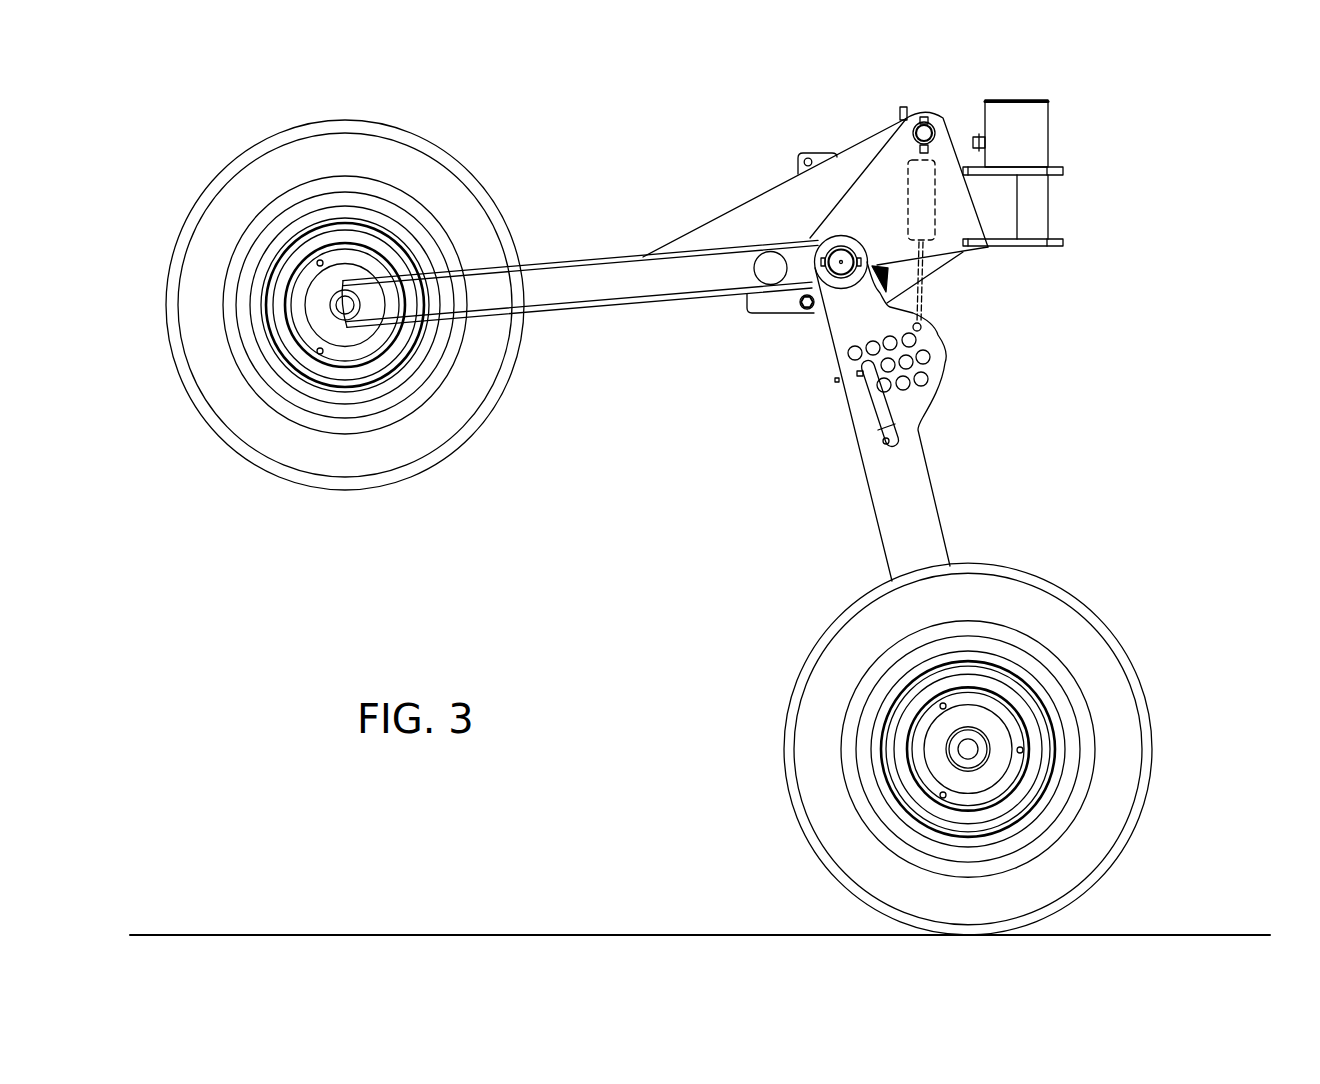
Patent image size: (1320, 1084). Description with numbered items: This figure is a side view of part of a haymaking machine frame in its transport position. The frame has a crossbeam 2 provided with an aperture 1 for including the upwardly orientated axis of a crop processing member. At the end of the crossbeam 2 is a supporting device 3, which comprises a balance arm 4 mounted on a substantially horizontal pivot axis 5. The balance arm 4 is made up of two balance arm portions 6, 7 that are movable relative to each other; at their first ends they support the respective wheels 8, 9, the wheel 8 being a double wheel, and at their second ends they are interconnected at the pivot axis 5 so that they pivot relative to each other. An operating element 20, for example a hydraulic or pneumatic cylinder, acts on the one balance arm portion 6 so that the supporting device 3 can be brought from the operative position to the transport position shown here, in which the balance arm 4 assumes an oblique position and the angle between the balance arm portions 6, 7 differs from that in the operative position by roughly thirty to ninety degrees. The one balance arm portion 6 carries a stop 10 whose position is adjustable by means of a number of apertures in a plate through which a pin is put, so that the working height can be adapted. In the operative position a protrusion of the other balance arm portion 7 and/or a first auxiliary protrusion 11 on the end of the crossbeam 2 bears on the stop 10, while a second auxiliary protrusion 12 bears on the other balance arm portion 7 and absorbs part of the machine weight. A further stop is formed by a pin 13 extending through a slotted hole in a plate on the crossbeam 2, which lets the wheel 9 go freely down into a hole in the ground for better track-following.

The aperture 1 is at (1019, 120).
The crossbeam 2 is at (1001, 223).
The supporting device 3 is at (1100, 483).
The balance arm 4 is at (723, 490).
The pivot axis 5 is at (842, 262).
The balance arm portion 6 is at (913, 485).
The balance arm portion 7 is at (550, 288).
The wheel 8 is at (1102, 693).
The wheel 9 is at (342, 457).
The stop 10 is at (883, 423).
The first auxiliary protrusion 11 is at (957, 228).
The second auxiliary protrusion 12 is at (775, 207).
The pin 13 is at (770, 268).
The operating element 20 is at (940, 342).